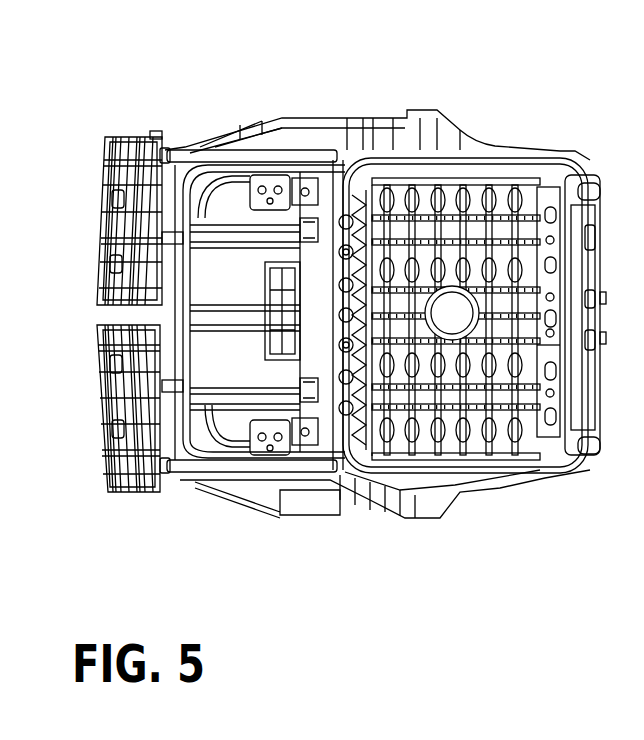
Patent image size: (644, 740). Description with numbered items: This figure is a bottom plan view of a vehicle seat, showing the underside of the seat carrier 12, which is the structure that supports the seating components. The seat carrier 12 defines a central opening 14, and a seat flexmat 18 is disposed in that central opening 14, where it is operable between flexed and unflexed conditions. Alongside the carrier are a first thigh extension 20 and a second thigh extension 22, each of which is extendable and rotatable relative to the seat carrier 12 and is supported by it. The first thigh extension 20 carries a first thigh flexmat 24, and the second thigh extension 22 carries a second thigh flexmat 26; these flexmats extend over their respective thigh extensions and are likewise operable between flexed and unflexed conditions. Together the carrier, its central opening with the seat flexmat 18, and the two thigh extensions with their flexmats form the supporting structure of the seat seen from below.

The seat carrier 12 is at (421, 125).
The central opening 14 is at (453, 168).
The seat flexmat 18 is at (467, 397).
The first thigh extension 20 is at (223, 137).
The second thigh extension 22 is at (212, 450).
The first thigh flexmat 24 is at (152, 146).
The second thigh flexmat 26 is at (152, 487).